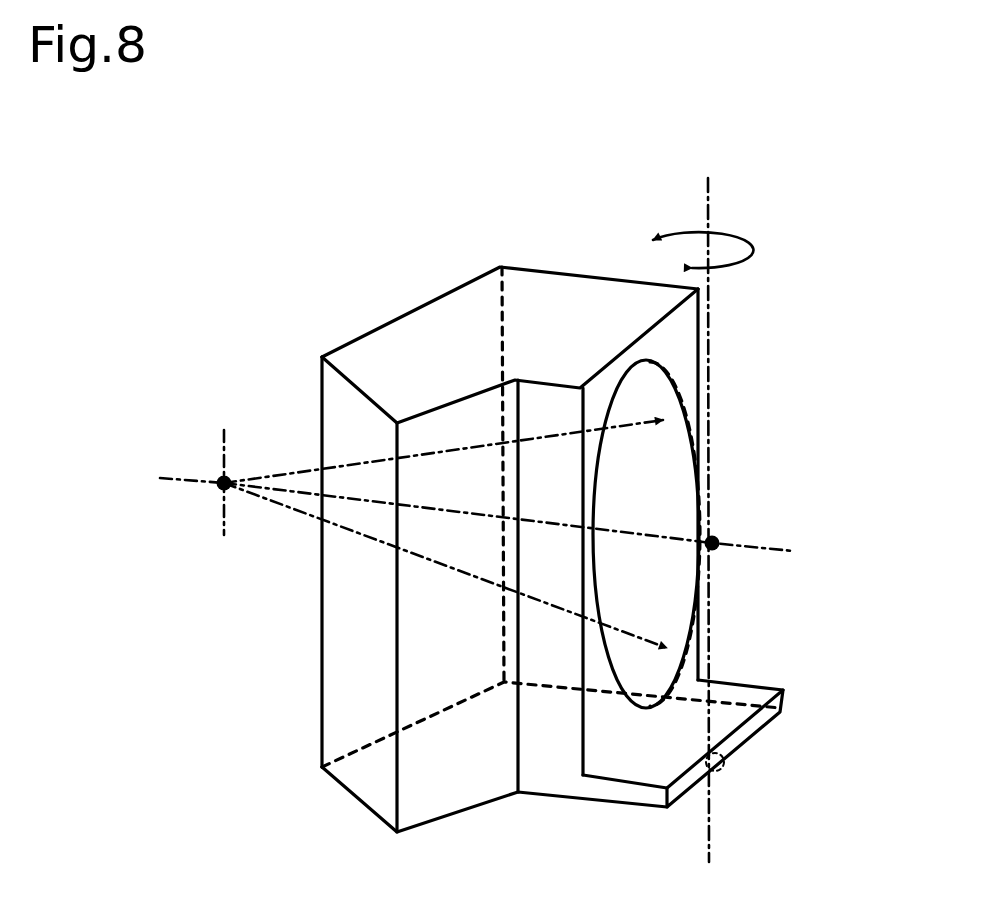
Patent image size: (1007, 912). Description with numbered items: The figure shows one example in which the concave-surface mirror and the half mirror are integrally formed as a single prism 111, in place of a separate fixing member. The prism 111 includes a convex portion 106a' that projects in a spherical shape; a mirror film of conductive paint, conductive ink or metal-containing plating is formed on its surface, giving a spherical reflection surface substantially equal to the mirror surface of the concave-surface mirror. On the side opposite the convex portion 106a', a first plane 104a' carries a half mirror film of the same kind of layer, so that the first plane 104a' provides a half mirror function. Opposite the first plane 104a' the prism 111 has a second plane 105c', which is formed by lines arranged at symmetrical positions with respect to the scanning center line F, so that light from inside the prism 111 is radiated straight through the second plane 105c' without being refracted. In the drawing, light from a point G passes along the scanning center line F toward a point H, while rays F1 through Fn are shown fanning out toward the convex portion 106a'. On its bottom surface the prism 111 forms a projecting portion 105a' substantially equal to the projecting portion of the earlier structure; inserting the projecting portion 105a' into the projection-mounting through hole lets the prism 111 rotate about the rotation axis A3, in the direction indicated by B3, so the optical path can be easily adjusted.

The prism 111 is at (560, 288).
The first plane 104a' is at (391, 292).
The second plane 105c' is at (293, 562).
The convex portion 106a' is at (739, 534).
The projecting portion 105a' is at (740, 743).
The rotation axis A3 is at (712, 185).
The rotation direction B3 is at (697, 229).
The object point G is at (213, 497).
The image point on axis H is at (716, 538).
The scanning center line F is at (777, 550).
The first light ray F1 is at (444, 451).
The n-th light ray Fn is at (445, 565).